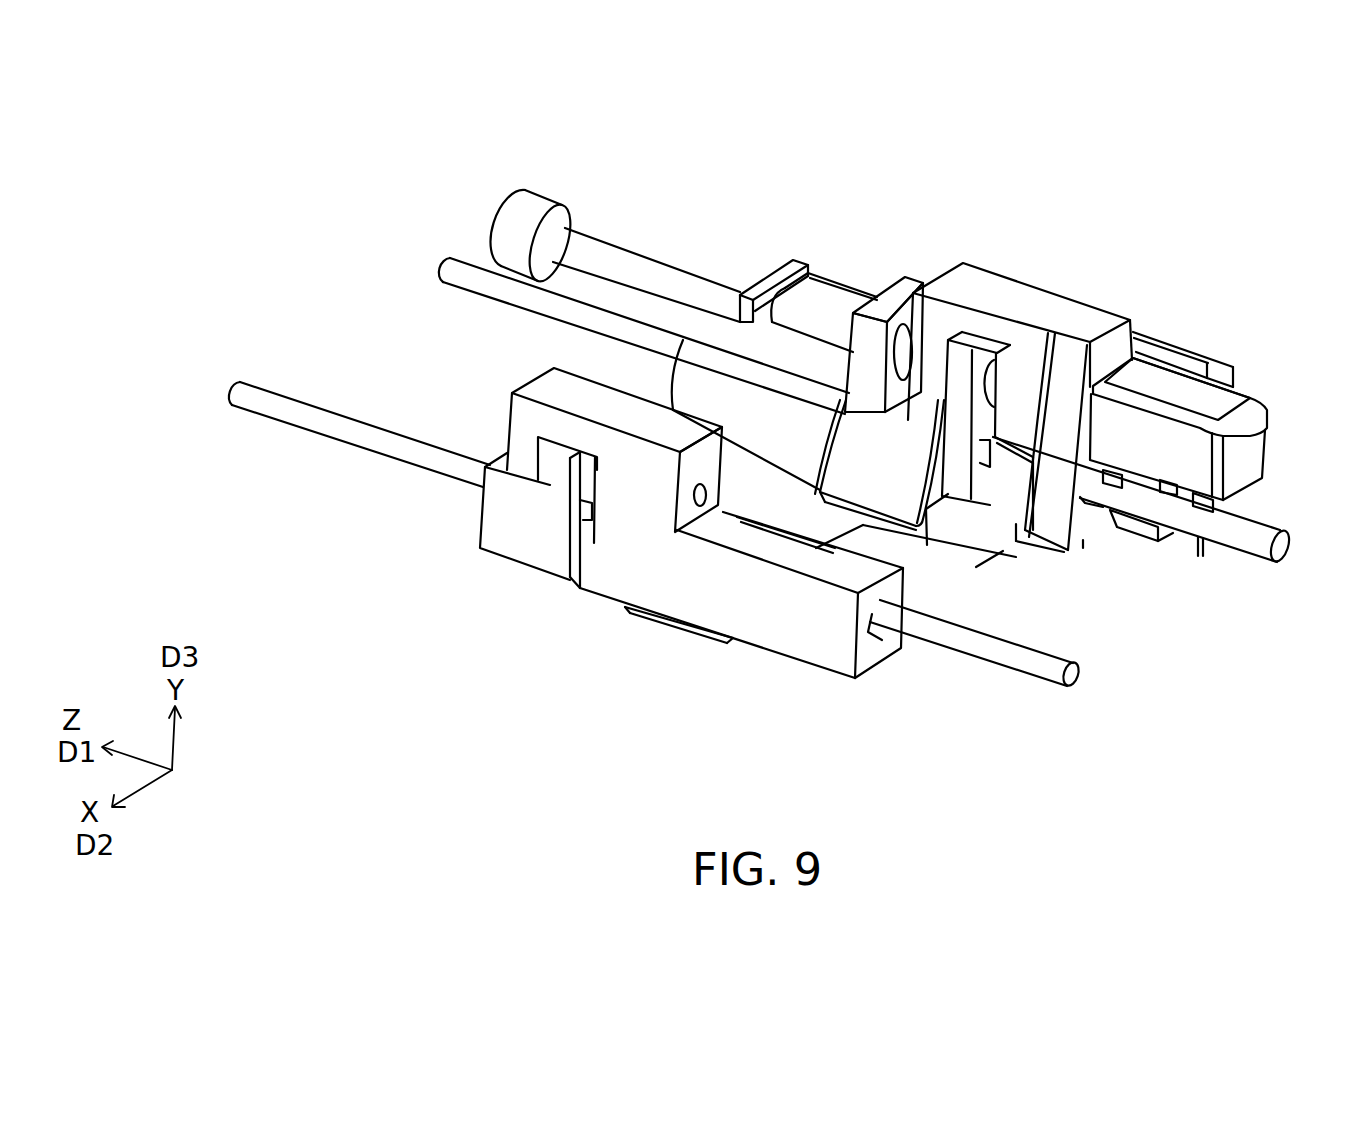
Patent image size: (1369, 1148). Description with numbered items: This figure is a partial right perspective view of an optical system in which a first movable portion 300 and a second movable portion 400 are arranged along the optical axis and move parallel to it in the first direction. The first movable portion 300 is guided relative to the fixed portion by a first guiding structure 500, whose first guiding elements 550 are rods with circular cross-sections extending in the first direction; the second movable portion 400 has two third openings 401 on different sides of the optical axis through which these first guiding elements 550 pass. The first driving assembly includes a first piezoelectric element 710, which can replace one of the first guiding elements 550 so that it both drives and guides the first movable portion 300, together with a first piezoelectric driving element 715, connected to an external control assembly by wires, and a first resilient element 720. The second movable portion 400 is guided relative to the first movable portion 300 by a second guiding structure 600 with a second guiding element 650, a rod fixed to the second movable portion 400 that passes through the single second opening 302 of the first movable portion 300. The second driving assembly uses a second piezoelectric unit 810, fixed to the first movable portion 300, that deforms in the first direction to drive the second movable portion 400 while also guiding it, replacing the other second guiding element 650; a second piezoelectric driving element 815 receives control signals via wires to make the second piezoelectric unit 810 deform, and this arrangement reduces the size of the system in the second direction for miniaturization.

The first movable portion 300 is at (688, 346).
The second opening 302 is at (637, 561).
The second movable portion 400 is at (896, 467).
The third opening 401 is at (877, 632).
The first guiding structure 500 is at (761, 473).
The first guiding element 550 is at (500, 292).
The second guiding structure 600 is at (637, 561).
The second guiding element 650 is at (598, 463).
The first piezoelectric element 710 is at (650, 267).
The first piezoelectric driving element 715 is at (1160, 340).
The first resilient element 720 is at (832, 296).
The second piezoelectric unit 810 is at (904, 350).
The second piezoelectric driving element 815 is at (1215, 398).